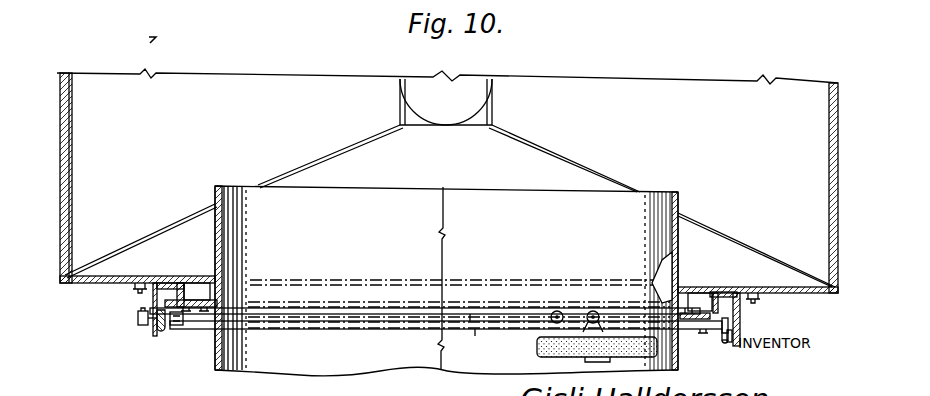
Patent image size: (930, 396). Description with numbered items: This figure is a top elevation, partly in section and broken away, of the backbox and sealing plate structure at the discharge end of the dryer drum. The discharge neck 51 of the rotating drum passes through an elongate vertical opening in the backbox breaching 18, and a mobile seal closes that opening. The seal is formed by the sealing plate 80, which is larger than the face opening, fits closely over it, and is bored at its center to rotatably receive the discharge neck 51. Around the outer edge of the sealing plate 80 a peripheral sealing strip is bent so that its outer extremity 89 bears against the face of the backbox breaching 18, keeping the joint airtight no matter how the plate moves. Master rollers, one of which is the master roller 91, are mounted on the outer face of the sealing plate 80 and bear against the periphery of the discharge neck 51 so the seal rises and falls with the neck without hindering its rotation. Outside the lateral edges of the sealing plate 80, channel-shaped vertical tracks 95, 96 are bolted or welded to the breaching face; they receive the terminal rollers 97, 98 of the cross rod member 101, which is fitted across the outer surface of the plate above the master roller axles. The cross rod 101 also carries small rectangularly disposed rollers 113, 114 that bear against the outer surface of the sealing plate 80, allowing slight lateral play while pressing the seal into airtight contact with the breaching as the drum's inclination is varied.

The discharge neck 51 is at (541, 261).
The cross rod member 101 is at (485, 326).
The rectangularly disposed roller 114 is at (553, 313).
The rectangularly disposed roller 113 is at (588, 313).
The master roller 91 is at (535, 348).
The sealing plate 80 is at (652, 297).
The outer extremity of peripheral sealing strip 89 is at (172, 290).
The vertical track 95 is at (160, 331).
The terminal roller 97 is at (167, 325).
The backbox breaching 18 is at (722, 293).
The terminal roller 98 is at (725, 332).
The vertical track 96 is at (729, 342).